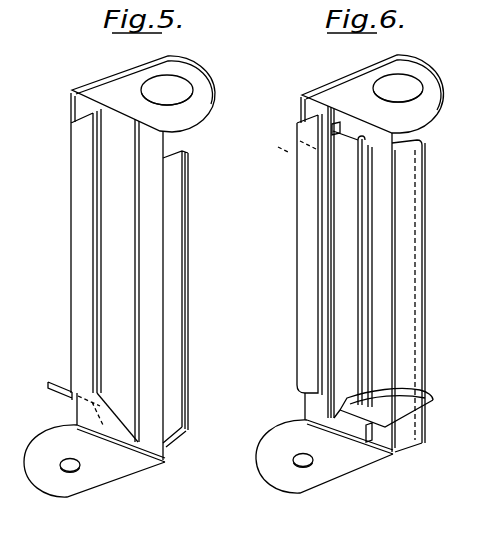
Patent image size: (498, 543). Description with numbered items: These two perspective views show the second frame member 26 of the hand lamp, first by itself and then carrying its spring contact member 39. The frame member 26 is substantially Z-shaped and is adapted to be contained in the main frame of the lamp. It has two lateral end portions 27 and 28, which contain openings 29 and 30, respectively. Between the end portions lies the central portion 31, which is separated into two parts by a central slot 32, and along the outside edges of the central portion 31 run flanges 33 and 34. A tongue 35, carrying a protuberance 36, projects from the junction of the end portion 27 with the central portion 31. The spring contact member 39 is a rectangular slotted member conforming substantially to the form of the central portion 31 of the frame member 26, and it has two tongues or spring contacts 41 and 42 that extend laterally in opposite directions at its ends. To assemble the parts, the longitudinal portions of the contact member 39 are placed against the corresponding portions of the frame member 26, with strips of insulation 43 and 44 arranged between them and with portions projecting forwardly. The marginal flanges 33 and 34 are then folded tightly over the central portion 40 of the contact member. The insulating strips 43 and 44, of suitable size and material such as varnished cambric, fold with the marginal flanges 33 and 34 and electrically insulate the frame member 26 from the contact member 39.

In FIG. 5, the second frame member 26 is at (112, 284).
In FIG. 6, the second frame member 26 is at (350, 272).
In FIG. 5, the lateral end portion 27 is at (76, 484).
In FIG. 6, the lateral end portion 27 is at (292, 484).
In FIG. 5, the lateral end portion 28 is at (197, 74).
In FIG. 6, the lateral end portion 28 is at (430, 72).
In FIG. 5, the opening 29 is at (62, 470).
In FIG. 6, the opening 29 is at (293, 463).
In FIG. 5, the opening 30 is at (183, 103).
In FIG. 6, the opening 30 is at (381, 81).
In FIG. 5, the central portion 31 is at (145, 201).
In FIG. 5, the central slot 32 is at (138, 242).
In FIG. 5, the flange 33 is at (172, 288).
In FIG. 6, the flange 33 is at (412, 183).
In FIG. 5, the flange 34 is at (72, 270).
In FIG. 6, the flange 34 is at (302, 310).
In FIG. 5, the tongue 35 is at (50, 381).
In FIG. 5, the protuberance 36 is at (70, 397).
In FIG. 6, the spring contact member 39 is at (383, 142).
In FIG. 6, the central portion 40 is at (385, 285).
In FIG. 6, the tongue or spring contact 41 is at (423, 402).
In FIG. 6, the tongue or spring contact 42 is at (298, 172).
In FIG. 6, the strip of insulation 43 is at (410, 147).
In FIG. 6, the strip of insulation 44 is at (307, 108).